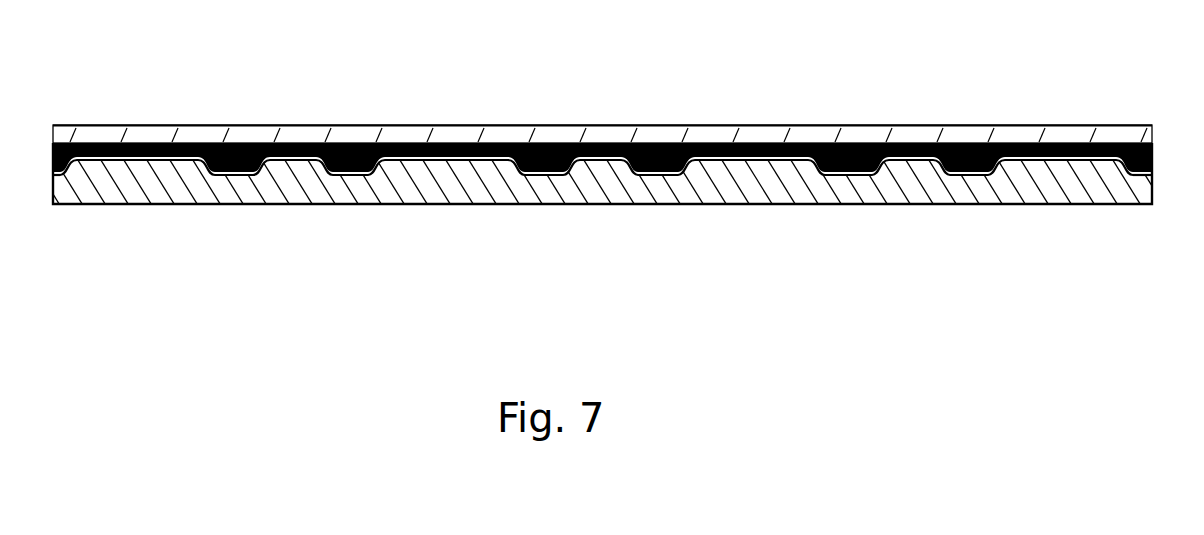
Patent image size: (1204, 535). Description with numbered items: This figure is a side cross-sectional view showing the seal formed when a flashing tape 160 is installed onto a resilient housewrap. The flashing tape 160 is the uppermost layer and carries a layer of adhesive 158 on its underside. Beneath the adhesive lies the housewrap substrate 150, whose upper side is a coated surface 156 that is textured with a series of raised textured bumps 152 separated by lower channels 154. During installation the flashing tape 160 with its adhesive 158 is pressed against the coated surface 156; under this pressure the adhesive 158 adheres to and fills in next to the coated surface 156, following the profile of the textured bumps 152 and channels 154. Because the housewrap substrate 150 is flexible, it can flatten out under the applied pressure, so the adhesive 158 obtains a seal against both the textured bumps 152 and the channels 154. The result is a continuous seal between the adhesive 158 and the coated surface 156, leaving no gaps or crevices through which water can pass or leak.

The housewrap substrate 150 is at (747, 193).
The textured bumps 152 is at (440, 165).
The channels 154 is at (548, 180).
The coated surface 156 is at (333, 175).
The adhesive 158 is at (548, 143).
The flashing tape 160 is at (262, 136).